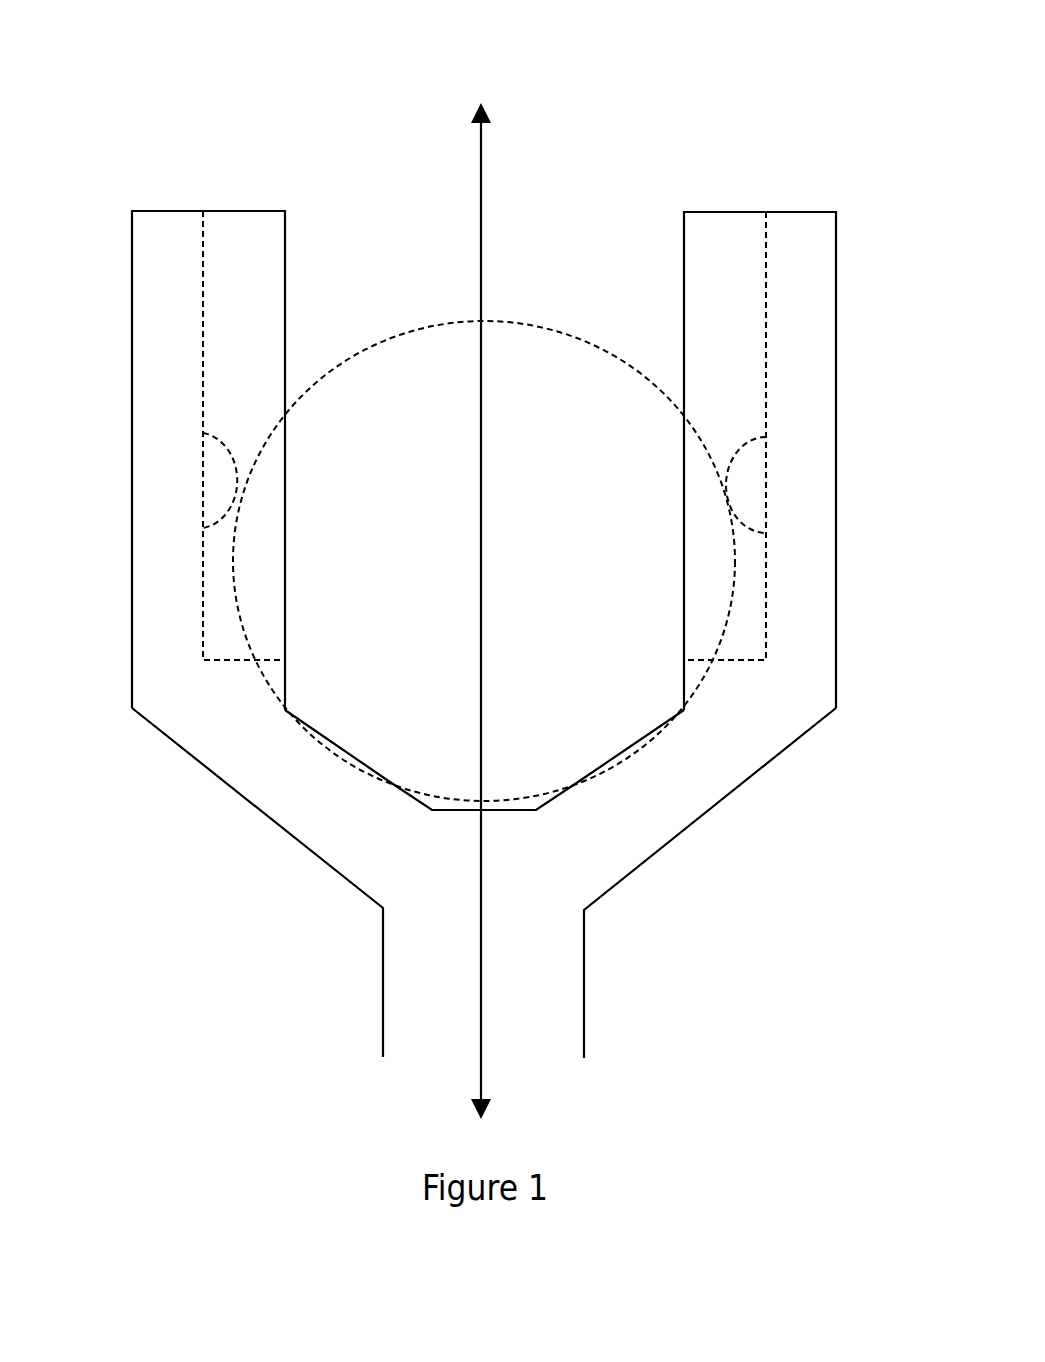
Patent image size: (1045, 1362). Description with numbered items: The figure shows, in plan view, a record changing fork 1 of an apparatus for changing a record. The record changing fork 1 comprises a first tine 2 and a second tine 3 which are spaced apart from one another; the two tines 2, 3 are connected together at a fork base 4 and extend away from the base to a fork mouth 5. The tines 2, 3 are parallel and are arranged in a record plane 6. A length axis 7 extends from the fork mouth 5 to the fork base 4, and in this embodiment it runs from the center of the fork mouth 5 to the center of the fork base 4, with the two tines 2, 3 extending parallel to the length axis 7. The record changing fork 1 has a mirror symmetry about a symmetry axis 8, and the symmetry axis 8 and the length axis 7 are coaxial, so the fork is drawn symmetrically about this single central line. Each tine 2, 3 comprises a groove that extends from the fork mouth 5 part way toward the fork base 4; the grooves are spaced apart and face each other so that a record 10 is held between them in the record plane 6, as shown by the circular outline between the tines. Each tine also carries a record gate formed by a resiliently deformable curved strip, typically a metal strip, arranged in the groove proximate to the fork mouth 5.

The record changing fork 1 is at (487, 560).
The first tine 2 is at (163, 414).
The second tine 3 is at (809, 416).
The fork base 4 is at (688, 883).
The fork mouth 5 is at (570, 238).
The record plane 6 is at (484, 459).
The length axis 7 is at (301, 909).
The symmetry axis 8 is at (481, 167).
The record 10 is at (422, 797).